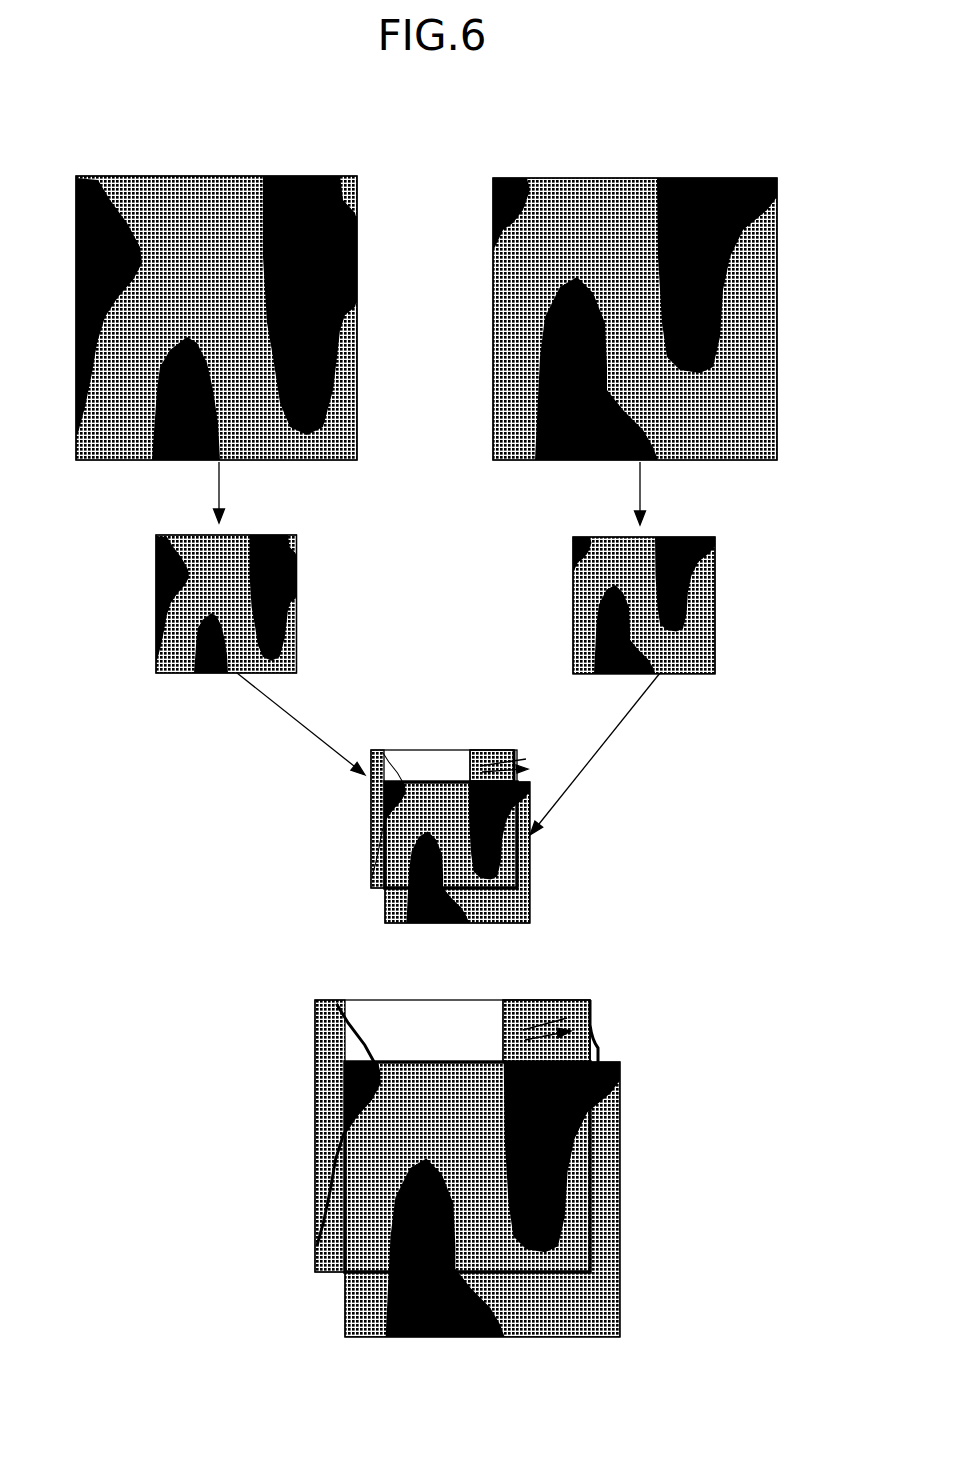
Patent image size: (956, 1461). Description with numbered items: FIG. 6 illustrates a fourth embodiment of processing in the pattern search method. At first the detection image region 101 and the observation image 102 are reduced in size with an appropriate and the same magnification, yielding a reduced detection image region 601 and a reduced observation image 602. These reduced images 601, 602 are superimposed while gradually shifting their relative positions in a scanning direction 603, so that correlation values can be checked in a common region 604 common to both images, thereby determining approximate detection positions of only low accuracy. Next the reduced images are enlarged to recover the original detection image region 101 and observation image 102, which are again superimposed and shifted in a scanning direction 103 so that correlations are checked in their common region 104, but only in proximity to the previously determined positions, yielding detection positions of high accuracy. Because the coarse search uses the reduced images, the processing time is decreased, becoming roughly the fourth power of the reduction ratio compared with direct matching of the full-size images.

The detection image region 101 is at (287, 177).
The observation image 102 is at (700, 178).
The scanning direction 103 is at (553, 1005).
The common region 104 is at (600, 1170).
The reduced detection image region 601 is at (297, 617).
The reduced observation image 602 is at (717, 620).
The scanning direction 603 is at (503, 752).
The common region 604 is at (380, 845).